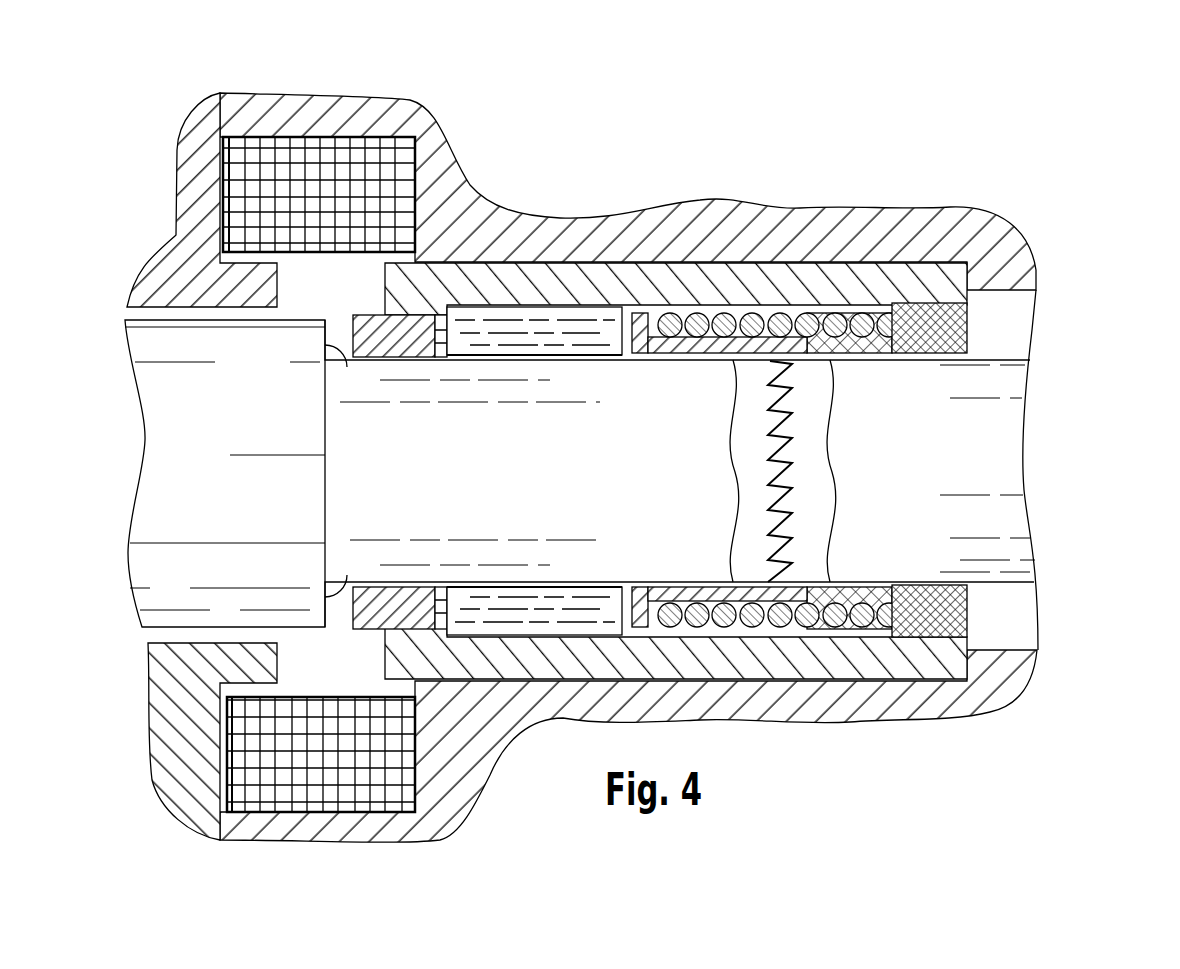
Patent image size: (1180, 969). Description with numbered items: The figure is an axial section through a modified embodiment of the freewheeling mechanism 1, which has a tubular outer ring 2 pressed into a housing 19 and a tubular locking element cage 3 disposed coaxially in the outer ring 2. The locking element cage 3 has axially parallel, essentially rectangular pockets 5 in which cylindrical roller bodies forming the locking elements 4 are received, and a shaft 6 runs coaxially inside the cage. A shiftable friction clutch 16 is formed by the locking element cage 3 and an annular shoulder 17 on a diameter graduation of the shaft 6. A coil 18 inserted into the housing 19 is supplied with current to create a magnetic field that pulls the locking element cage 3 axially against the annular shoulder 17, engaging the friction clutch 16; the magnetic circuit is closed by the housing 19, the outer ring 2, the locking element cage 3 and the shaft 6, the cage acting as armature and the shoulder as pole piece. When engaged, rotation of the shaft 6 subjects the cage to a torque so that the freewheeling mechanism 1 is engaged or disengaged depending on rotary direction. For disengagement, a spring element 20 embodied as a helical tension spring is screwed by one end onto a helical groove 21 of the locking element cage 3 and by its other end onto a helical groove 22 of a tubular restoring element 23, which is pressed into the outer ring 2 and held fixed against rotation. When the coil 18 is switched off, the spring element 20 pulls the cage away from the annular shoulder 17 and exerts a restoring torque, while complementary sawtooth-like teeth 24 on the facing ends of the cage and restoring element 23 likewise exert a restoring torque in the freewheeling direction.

The freewheeling mechanism 1 is at (1076, 132).
The outer ring 2 is at (721, 285).
The locking element cage 3 is at (418, 347).
The locking elements 4 is at (536, 320).
The pockets 5 is at (533, 358).
The shaft 6 is at (983, 438).
The friction clutch 16 is at (339, 292).
The annular shoulder 17 is at (340, 360).
The coil 18 is at (283, 170).
The housing 19 is at (645, 228).
The spring element 20 is at (838, 340).
The helical groove 21 is at (690, 352).
The helical groove 22 is at (800, 352).
The restoring element 23 is at (924, 308).
The sawtooth-like teeth 24 is at (783, 472).